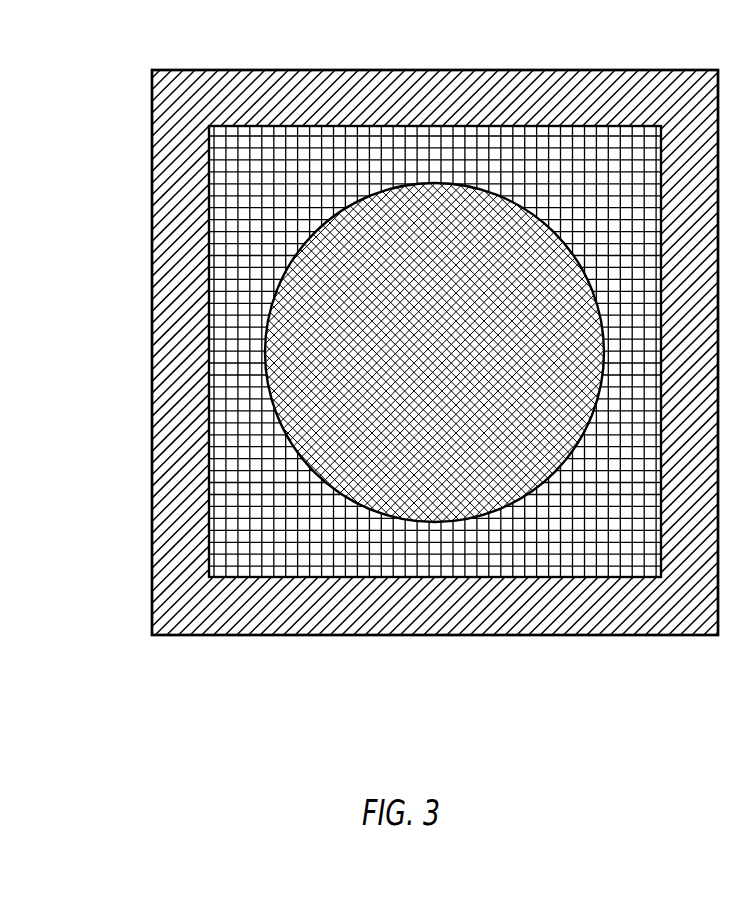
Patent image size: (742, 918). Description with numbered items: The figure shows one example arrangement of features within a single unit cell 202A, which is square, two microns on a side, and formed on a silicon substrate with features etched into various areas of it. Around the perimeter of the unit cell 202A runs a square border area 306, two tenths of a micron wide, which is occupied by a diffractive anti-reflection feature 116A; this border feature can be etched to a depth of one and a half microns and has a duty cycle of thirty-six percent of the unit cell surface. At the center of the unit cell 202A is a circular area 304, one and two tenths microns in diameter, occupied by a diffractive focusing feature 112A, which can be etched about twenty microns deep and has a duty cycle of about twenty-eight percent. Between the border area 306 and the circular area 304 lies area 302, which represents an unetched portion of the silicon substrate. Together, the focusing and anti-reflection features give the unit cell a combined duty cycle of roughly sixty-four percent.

The unit cell 202A is at (90, 89).
The diffractive anti-reflection feature 116A is at (152, 288).
The diffractive focusing feature 112A is at (266, 350).
The square border area 306 is at (453, 110).
The unetched area 302 is at (453, 166).
The circular area 304 is at (453, 364).